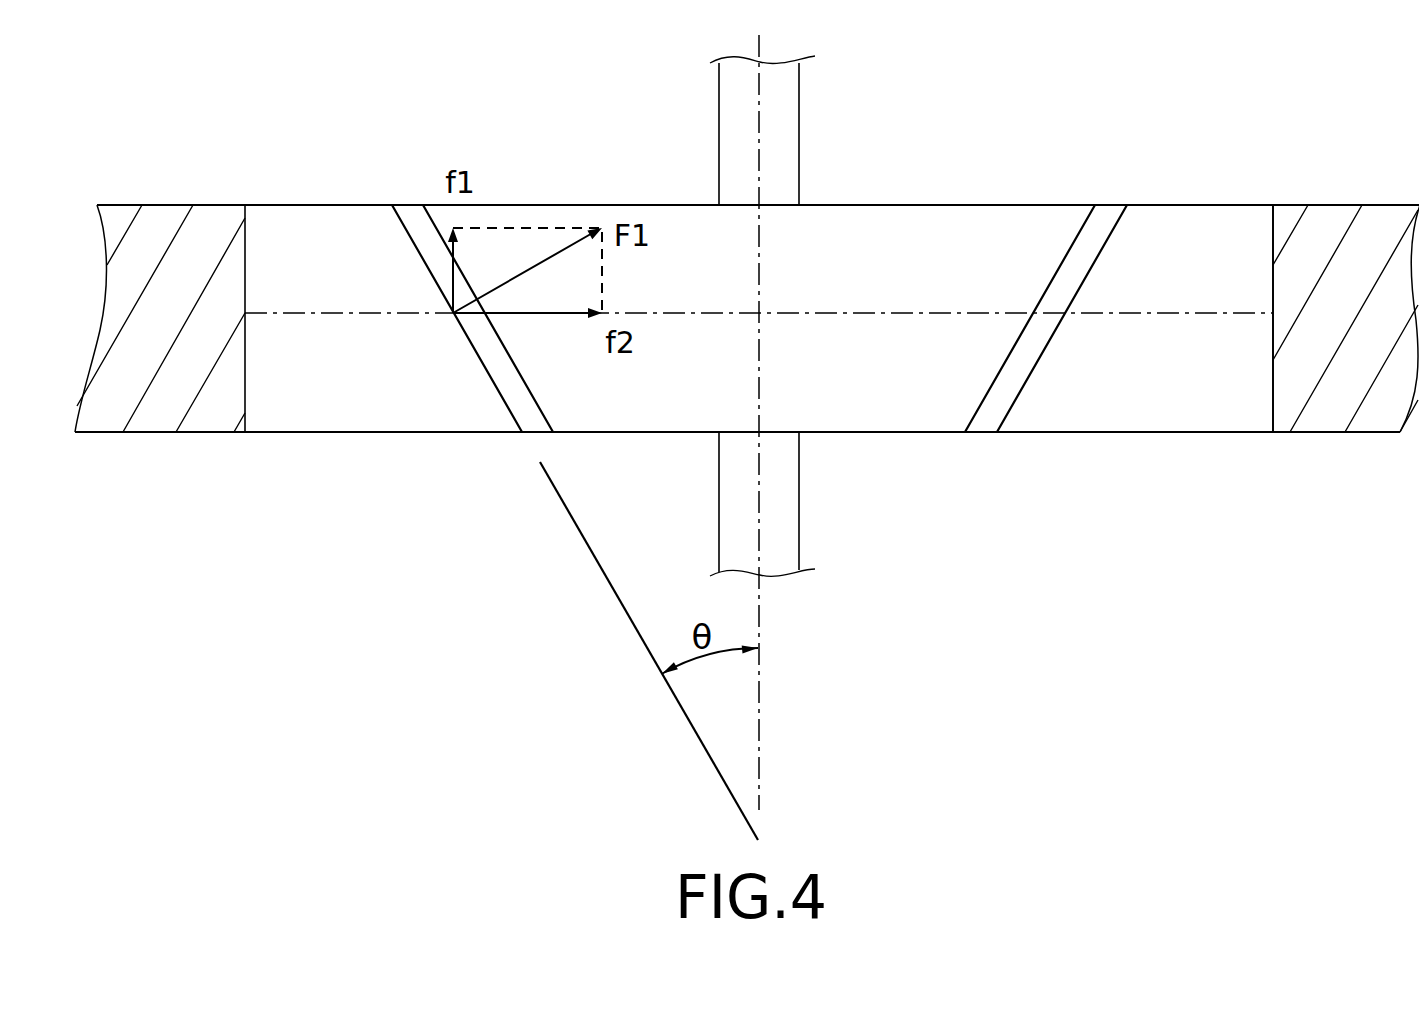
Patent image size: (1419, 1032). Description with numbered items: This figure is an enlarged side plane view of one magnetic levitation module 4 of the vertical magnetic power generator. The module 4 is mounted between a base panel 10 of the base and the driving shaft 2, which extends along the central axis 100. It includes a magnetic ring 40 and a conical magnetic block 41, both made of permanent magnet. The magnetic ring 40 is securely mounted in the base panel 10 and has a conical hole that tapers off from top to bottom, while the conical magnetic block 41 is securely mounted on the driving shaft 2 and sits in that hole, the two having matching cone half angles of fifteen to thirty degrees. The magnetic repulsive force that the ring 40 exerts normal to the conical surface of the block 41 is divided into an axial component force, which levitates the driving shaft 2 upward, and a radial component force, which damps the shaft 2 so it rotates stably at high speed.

The driving shaft 2 is at (785, 480).
The magnetic levitation module 4 is at (1082, 182).
The base panel 10 is at (1312, 262).
The magnetic ring 40 is at (1209, 248).
The conical magnetic block 41 is at (888, 247).
The central axis 100 is at (759, 113).